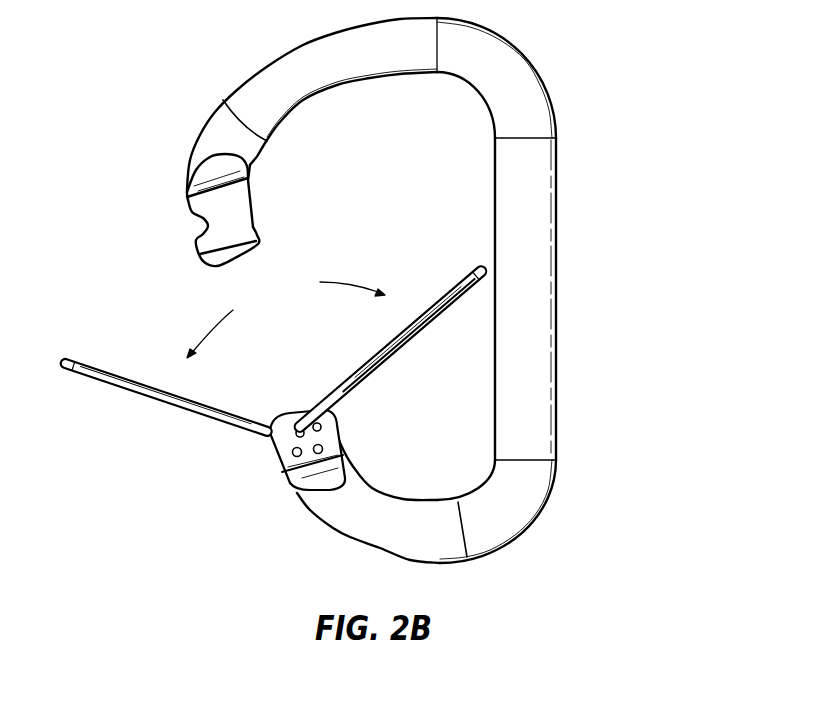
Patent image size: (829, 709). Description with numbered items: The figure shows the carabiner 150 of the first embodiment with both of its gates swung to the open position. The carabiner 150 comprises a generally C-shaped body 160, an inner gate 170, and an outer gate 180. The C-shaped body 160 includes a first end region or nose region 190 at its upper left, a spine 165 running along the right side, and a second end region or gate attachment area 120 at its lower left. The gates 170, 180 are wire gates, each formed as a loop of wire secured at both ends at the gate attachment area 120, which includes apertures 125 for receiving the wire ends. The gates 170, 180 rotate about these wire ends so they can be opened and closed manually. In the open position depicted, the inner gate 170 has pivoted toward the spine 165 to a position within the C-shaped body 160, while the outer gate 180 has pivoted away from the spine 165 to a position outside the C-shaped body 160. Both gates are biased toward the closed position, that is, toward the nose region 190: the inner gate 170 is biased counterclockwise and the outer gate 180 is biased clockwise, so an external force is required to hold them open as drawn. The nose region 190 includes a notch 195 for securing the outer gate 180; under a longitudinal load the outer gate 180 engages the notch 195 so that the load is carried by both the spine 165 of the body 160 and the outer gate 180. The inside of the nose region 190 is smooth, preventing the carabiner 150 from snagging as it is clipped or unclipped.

The gate attachment area 120 is at (316, 454).
The apertures 125 is at (330, 448).
The carabiner 150 is at (403, 290).
The C-shaped body 160 is at (530, 92).
The spine 165 is at (535, 340).
The inner gate 170 is at (447, 297).
The outer gate 180 is at (147, 393).
The nose region 190 is at (176, 263).
The notch 195 is at (199, 229).